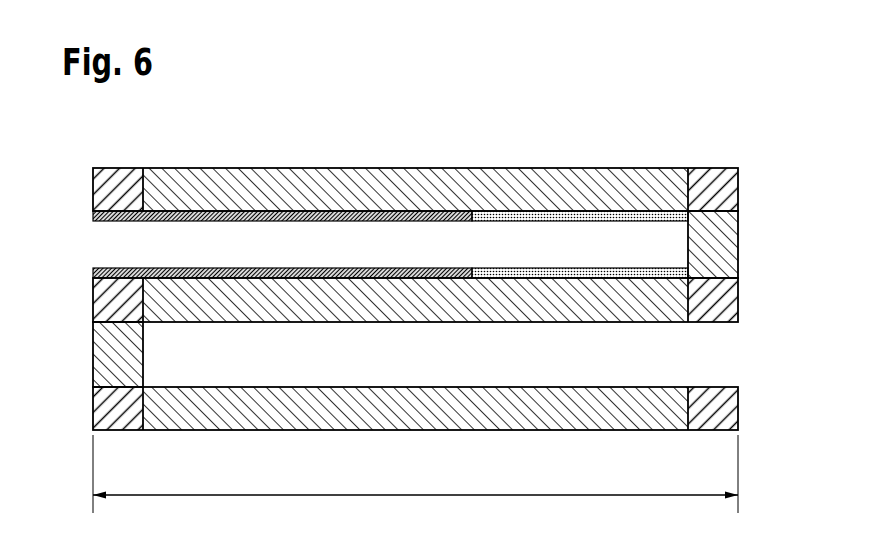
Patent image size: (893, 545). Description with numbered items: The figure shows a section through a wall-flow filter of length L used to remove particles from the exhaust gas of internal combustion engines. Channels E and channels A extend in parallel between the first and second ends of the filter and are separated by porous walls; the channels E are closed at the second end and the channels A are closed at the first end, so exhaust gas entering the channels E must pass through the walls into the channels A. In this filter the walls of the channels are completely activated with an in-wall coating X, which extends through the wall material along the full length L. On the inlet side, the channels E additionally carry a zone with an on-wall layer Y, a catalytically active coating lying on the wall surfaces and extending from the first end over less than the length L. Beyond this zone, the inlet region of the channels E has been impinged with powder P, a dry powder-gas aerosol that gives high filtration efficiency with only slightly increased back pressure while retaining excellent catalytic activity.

The in-wall coating X is at (252, 195).
The catalytically active coating Y is at (93, 216).
The powder P is at (644, 219).
The channels (inlet side) E is at (408, 259).
The channels (outlet side) A is at (407, 367).
The length L is at (415, 474).